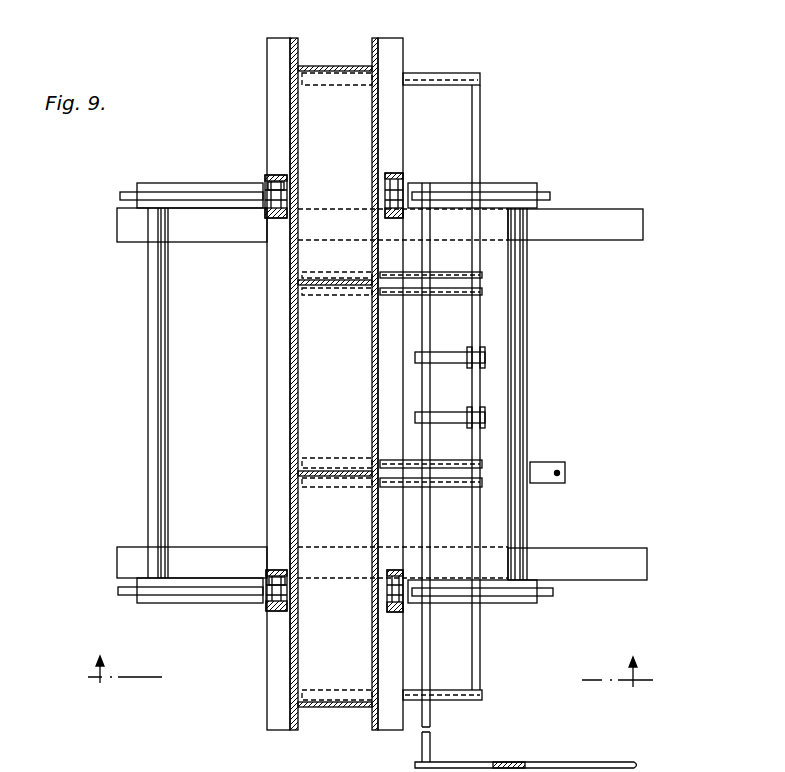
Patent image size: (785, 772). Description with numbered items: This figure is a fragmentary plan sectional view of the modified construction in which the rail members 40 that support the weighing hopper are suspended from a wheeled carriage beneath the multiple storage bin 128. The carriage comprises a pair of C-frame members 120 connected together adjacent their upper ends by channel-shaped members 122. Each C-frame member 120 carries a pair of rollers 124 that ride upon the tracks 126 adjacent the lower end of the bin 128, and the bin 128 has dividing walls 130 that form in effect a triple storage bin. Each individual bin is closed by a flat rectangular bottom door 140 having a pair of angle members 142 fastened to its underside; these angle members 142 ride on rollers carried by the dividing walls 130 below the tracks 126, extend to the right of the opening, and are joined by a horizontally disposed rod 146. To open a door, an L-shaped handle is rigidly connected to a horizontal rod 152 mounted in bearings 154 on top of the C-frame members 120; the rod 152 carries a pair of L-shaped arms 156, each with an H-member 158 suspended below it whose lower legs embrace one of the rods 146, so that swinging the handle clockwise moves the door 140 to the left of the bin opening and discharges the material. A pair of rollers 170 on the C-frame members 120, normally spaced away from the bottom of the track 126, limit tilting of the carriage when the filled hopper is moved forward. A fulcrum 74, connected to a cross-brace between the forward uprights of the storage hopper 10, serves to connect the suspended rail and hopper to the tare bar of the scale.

The storage hopper 10 is at (370, 661).
The rail members 40 is at (618, 236).
The fulcrum 74 is at (565, 472).
The C-frame members 120 is at (175, 183).
The channel-shaped members 122 is at (150, 443).
The rollers 124 is at (403, 178).
The tracks 126 is at (403, 55).
The multiple storage bin 128 is at (292, 408).
The dividing walls 130 is at (340, 55).
The bottom door 140 is at (337, 652).
The angle members 142 is at (432, 85).
The rod 146 is at (480, 148).
The horizontal rod 152 is at (432, 745).
The bearings 154 is at (427, 197).
The L-shaped arms 156 is at (440, 420).
The H-member 158 is at (485, 358).
The rollers 170 is at (265, 180).